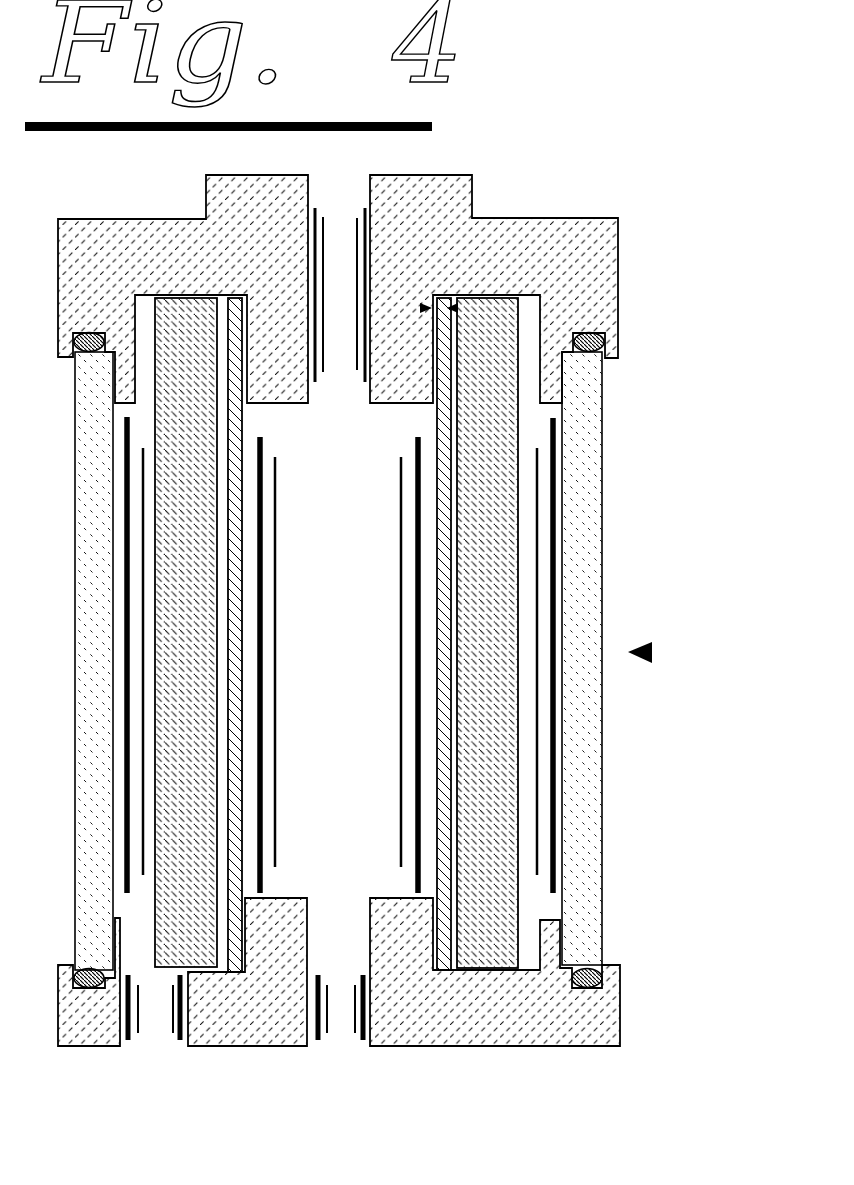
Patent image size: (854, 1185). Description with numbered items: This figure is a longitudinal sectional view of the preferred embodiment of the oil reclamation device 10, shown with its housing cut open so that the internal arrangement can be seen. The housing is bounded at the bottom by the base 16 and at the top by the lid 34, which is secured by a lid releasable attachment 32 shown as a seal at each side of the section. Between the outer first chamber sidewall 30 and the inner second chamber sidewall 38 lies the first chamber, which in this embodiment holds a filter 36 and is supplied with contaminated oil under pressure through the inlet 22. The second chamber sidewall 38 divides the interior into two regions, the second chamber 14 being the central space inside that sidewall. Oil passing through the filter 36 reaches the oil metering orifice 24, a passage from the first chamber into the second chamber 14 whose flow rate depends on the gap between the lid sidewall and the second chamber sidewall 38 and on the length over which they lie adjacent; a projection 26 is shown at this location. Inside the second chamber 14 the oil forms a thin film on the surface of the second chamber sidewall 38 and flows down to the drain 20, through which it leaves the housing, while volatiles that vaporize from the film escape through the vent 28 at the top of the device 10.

The oil reclamation device 10 is at (652, 652).
The second chamber 14 is at (322, 822).
The base 16 is at (563, 1015).
The drain 20 is at (340, 1003).
The inlet 22 is at (157, 1005).
The oil metering orifice 24 is at (458, 315).
The projection 26 is at (417, 363).
The vent 28 is at (342, 285).
The first chamber sidewall 30 is at (578, 535).
The lid releasable attachment 32 is at (558, 367).
The lid 34 is at (567, 268).
The filter 36 is at (500, 725).
The second chamber sidewall 38 is at (448, 578).